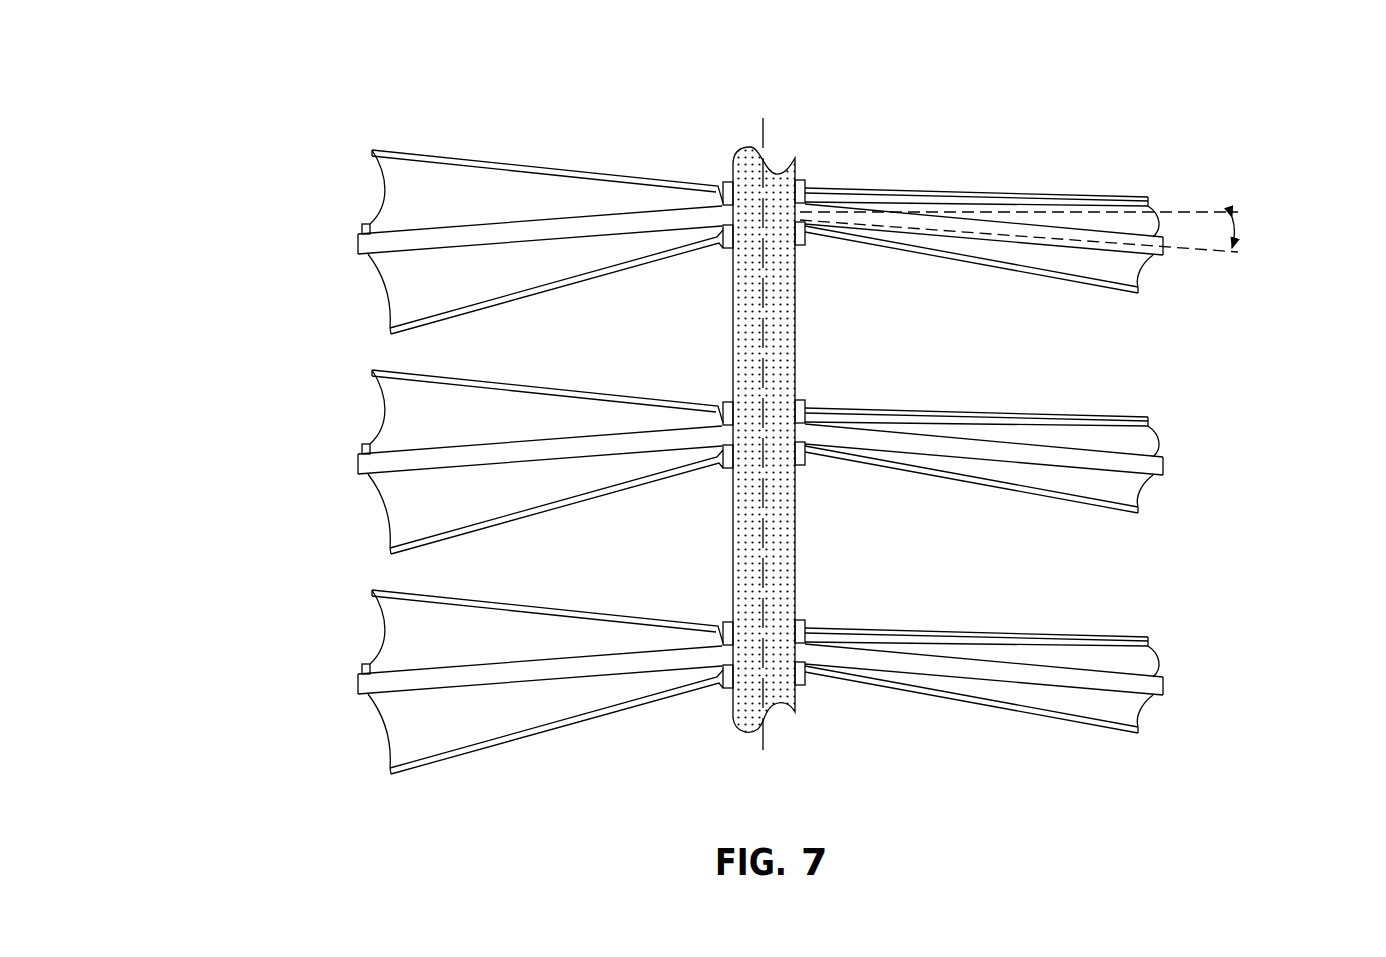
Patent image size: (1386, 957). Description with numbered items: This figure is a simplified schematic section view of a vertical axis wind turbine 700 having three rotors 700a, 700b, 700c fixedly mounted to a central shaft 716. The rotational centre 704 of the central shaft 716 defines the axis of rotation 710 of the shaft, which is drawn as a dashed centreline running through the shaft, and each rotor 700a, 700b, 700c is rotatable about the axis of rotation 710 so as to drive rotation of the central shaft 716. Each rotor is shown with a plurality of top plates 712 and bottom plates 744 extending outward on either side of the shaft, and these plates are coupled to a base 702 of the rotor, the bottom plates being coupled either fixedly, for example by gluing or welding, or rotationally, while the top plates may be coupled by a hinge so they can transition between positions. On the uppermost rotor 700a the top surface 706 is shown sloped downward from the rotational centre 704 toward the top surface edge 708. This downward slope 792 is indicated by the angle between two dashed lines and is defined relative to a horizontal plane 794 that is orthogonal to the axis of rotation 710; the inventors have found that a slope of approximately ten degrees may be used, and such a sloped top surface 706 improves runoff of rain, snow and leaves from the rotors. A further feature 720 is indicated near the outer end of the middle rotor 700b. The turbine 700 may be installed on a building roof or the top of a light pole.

The vertical axis wind turbine 700 is at (266, 71).
The rotor 700a is at (333, 195).
The rotor 700b is at (734, 462).
The rotor 700c is at (659, 676).
The rotational centre 704 is at (788, 150).
The central shaft 716 is at (754, 146).
The axis of rotation 710 is at (763, 748).
The top plate 712 is at (1100, 222).
The top surface 706 is at (1112, 232).
The top surface edge 708 is at (1166, 238).
The bottom plate 744 is at (1110, 290).
The horizontal plane 794 is at (1200, 212).
The downward slope 792 is at (1238, 218).
The beam end 720 is at (1056, 432).
The base 702 is at (1056, 449).